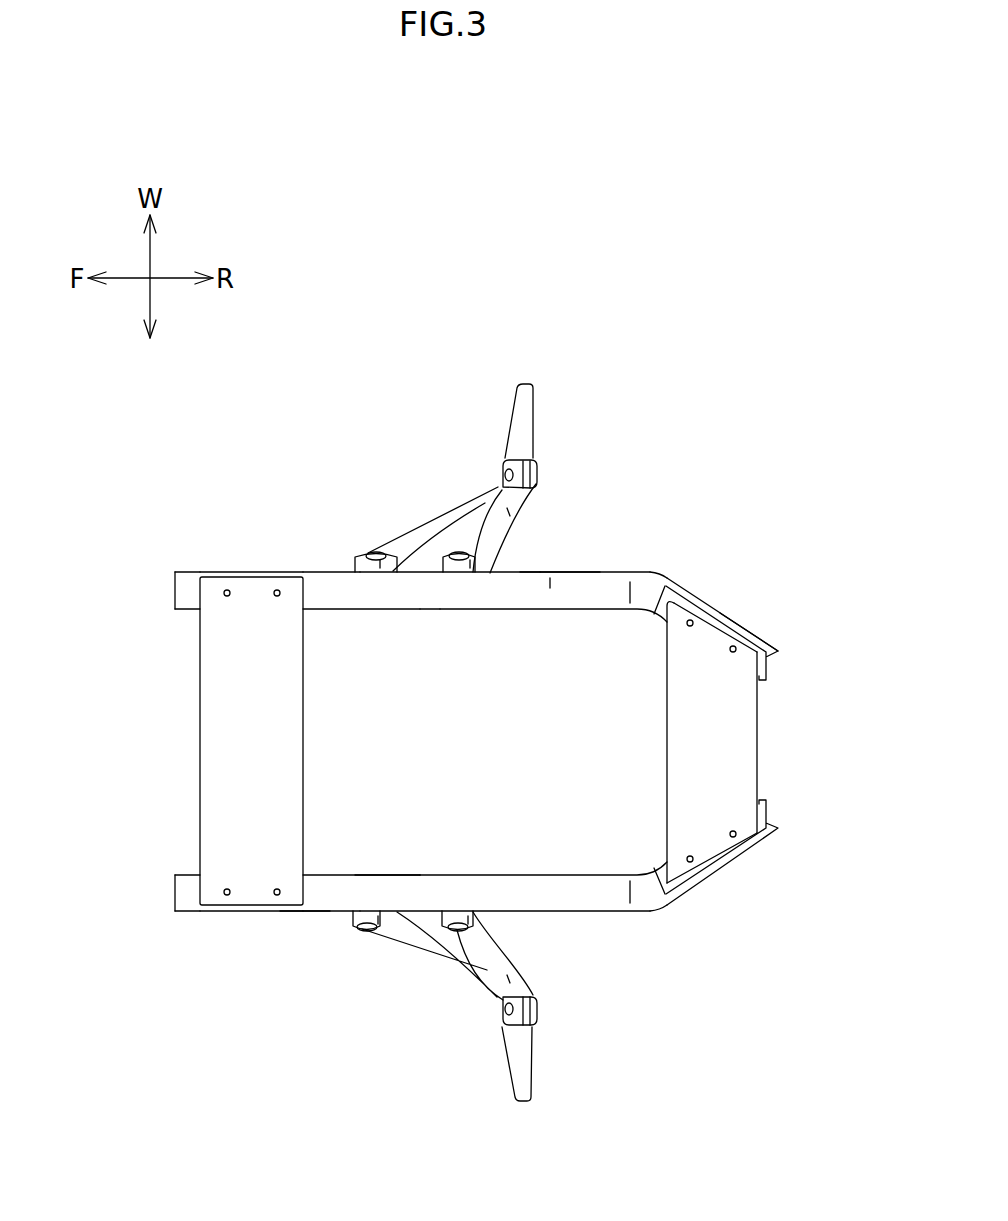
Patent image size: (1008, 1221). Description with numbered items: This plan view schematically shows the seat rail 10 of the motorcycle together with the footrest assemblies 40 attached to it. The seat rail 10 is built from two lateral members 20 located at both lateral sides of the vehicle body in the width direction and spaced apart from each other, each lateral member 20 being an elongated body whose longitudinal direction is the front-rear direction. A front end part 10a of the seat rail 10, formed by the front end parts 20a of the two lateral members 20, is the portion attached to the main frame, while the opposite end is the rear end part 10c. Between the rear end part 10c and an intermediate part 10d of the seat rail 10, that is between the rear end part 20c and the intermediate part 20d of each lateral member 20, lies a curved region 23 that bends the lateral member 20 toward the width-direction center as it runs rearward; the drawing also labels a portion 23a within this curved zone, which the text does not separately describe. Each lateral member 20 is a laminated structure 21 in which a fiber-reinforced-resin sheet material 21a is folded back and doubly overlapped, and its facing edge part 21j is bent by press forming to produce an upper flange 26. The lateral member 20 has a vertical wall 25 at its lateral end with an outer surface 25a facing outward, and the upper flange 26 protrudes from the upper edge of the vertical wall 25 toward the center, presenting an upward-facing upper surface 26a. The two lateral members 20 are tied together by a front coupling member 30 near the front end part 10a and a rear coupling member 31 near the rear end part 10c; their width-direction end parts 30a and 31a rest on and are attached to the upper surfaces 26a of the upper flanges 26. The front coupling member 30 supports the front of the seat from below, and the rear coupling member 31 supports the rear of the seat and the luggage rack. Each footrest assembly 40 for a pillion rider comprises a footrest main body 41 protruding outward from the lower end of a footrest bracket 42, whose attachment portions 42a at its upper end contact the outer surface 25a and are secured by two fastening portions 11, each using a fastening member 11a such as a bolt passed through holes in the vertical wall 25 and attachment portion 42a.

The seat rail 10 is at (267, 563).
The front end part of the seat rail 10a is at (173, 585).
The rear end part of the seat rail 10c is at (733, 620).
The intermediate part of the seat rail 10d is at (552, 574).
The fastening portion 11 is at (428, 552).
The fastening member 11a is at (362, 933).
The lateral member 20 is at (588, 585).
The front end part of the lateral member 20a is at (173, 593).
The rear end part of the lateral member 20c is at (743, 627).
The intermediate part of the lateral member 20d is at (537, 595).
The laminated structure 21 is at (327, 583).
The sheet material 21a is at (343, 595).
The facing edge part 21j is at (427, 593).
The curved region 23 is at (640, 585).
The bend 23a is at (630, 917).
The vertical wall 25 is at (232, 574).
The outer surface 25a is at (293, 913).
The upper flange 26 is at (503, 593).
The upper surface 26a is at (367, 890).
The front coupling member 30 is at (222, 742).
The end part of the front coupling member 30a is at (213, 593).
The rear coupling member 31 is at (717, 732).
The end part of the rear coupling member 31a is at (708, 627).
The footrest assembly 40 is at (490, 498).
The footrest main body 41 is at (508, 383).
The footrest bracket 42 is at (458, 506).
The attachment portion 42a is at (546, 490).